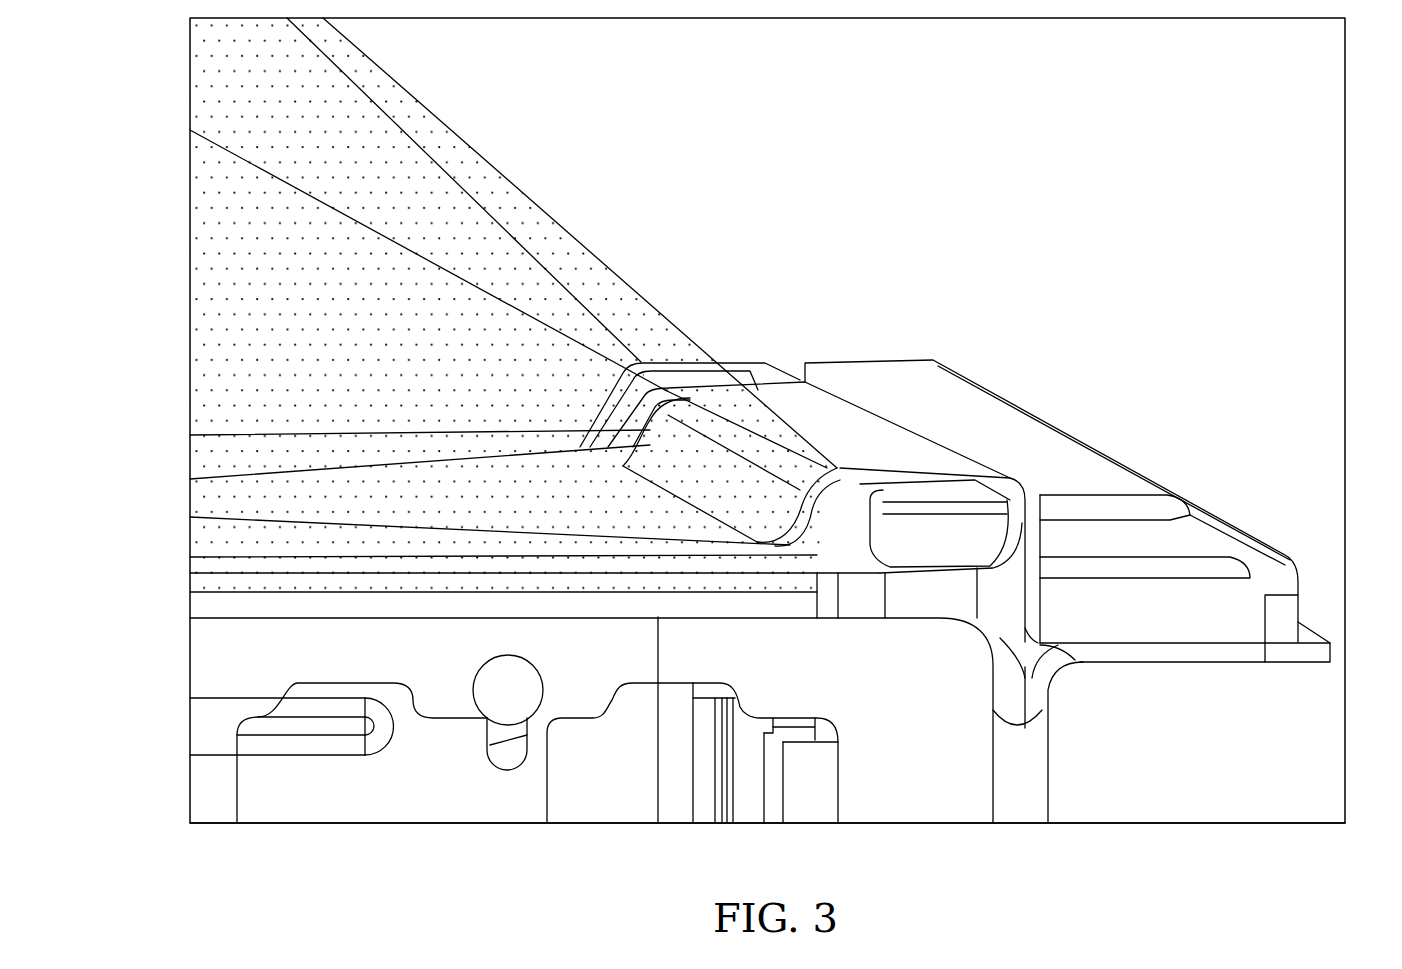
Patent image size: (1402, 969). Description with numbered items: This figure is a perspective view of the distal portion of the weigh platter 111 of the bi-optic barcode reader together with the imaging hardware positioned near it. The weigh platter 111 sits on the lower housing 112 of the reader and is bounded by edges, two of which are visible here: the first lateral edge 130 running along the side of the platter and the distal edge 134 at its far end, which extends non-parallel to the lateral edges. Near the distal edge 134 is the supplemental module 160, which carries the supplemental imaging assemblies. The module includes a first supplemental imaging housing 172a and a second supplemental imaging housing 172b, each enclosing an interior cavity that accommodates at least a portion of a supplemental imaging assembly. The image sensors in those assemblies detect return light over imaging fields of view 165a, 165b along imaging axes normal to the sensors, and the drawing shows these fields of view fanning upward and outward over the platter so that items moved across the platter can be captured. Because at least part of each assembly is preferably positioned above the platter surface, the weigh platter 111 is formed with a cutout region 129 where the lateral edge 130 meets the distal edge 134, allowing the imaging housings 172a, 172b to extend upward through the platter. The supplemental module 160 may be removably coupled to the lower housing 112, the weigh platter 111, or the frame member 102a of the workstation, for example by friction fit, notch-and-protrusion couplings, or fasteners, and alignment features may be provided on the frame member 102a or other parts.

The imaging field of view 165b is at (393, 175).
The imaging field of view 165a is at (487, 177).
The second supplemental imaging housing 172b is at (735, 362).
The distal edge 134 is at (876, 418).
The first supplemental imaging housing 172a is at (982, 512).
The supplemental module 160 is at (1043, 690).
The frame member 102a is at (1003, 788).
The first lateral edge 130 is at (318, 593).
The weigh platter 111 is at (448, 580).
The lower housing 112 is at (622, 810).
The cutout region 129 is at (802, 557).